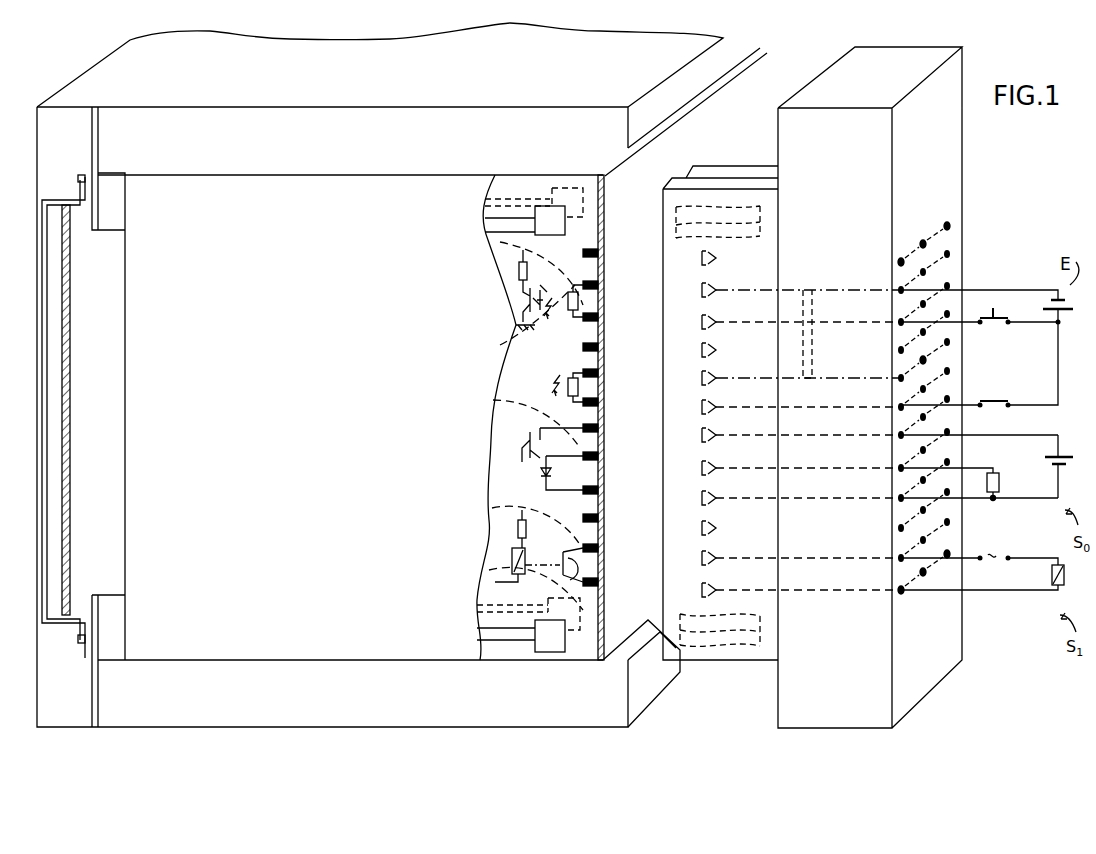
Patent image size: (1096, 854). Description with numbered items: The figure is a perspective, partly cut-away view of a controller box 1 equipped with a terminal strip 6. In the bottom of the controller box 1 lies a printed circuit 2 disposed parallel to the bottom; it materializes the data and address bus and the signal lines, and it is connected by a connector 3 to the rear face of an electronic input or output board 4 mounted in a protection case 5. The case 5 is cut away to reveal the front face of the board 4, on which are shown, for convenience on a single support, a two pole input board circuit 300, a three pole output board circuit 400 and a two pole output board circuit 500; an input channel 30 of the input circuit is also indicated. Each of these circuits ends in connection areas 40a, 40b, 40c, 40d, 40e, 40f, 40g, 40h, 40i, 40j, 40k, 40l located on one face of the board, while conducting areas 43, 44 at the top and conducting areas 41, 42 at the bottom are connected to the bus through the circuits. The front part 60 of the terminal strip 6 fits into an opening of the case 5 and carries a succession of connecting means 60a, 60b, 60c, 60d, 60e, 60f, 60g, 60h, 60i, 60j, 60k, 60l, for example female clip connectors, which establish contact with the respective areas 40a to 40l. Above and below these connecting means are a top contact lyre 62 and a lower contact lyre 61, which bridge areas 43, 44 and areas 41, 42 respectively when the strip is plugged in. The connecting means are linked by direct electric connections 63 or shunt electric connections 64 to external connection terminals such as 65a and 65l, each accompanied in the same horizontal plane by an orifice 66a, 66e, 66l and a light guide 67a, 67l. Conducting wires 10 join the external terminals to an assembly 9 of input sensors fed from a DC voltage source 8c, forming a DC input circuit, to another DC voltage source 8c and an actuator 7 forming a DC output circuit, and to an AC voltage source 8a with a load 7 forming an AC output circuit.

The controller box 1 is at (355, 713).
The printed circuit 2 is at (100, 492).
The connector 3 is at (100, 560).
The electronic input or output board 4 is at (118, 215).
The protection case 5 is at (230, 630).
The terminal strip 6 is at (857, 708).
The actuator 7 is at (1050, 575).
The AC voltage source 8a is at (994, 547).
The DC voltage source 8c is at (1078, 307).
The assembly of input sensors 9 is at (1008, 400).
The conducting wire 10 is at (978, 322).
The input channel 30 is at (566, 366).
The connection area 40a is at (604, 250).
The connection area 40b is at (604, 282).
The connection area 40c is at (604, 314).
The connection area 40d is at (604, 344).
The connection area 40e is at (604, 370).
The connection area 40f is at (604, 399).
The connection area 40g is at (604, 425).
The connection area 40h is at (604, 453).
The connection area 40i is at (604, 487).
The connection area 40j is at (604, 515).
The connection area 40k is at (604, 545).
The connection area 40l is at (604, 579).
The conducting area 41 is at (548, 652).
The conducting area 42 is at (572, 630).
The conducting area 43 is at (548, 208).
The conducting area 44 is at (570, 190).
The front part of the terminal strip 60 is at (735, 143).
The connecting means 60a is at (691, 258).
The connecting means 60b is at (783, 290).
The connecting means 60c is at (783, 322).
The connecting means 60d is at (691, 350).
The connecting means 60e is at (783, 378).
The connecting means 60f is at (783, 407).
The connecting means 60g is at (783, 435).
The connecting means 60h is at (783, 468).
The connecting means 60i is at (783, 498).
The connecting means 60j is at (691, 528).
The connecting means 60k is at (783, 558).
The connecting means 60l is at (783, 590).
The lower contact lyre 61 is at (748, 648).
The top contact lyre 62 is at (762, 222).
The direct electric connection 63 is at (836, 595).
The shunt electric connection 64 is at (872, 292).
The external connection terminal 65a is at (898, 258).
The external connection terminal 65l is at (900, 598).
The orifice 66a is at (924, 240).
The orifice 66e is at (918, 364).
The orifice 66l is at (921, 578).
The light guide 67a is at (950, 226).
The light guide 67l is at (946, 560).
The two pole input board circuit 300 is at (470, 305).
The three pole output board circuit 400 is at (475, 465).
The two pole output board circuit 500 is at (440, 548).